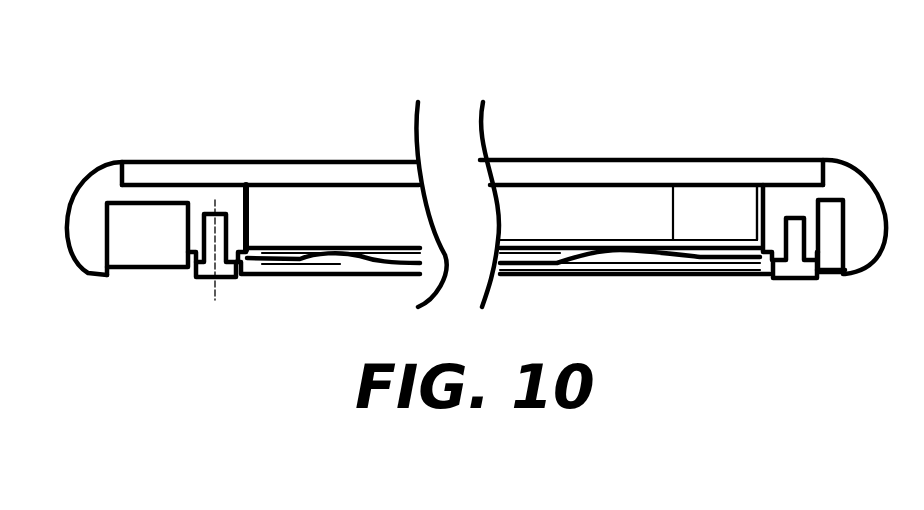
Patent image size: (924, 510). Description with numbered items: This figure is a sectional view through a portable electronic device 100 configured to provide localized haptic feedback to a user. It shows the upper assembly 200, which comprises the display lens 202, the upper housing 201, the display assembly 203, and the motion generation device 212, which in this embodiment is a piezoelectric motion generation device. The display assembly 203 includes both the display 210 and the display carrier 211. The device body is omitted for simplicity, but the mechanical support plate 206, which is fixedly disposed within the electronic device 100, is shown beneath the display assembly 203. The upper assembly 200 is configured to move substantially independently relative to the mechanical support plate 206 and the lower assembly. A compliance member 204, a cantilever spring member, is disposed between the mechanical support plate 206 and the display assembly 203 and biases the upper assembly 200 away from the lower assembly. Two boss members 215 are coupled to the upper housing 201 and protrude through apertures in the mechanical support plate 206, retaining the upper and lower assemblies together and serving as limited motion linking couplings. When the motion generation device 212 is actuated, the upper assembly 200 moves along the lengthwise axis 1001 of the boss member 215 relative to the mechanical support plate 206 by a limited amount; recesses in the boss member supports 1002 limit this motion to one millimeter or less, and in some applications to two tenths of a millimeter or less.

The electronic device 100 is at (508, 150).
The upper assembly 200 is at (94, 156).
The upper housing 201 is at (110, 181).
The display lens 202 is at (318, 172).
The display assembly 203 is at (283, 172).
The compliance member 204 is at (327, 256).
The mechanical support plate 206 is at (396, 275).
The display 210 is at (650, 208).
The display carrier 211 is at (603, 240).
The motion generation device 212 is at (705, 208).
The boss member 215 is at (202, 279).
The lengthwise axis 1001 is at (217, 292).
The boss member support 1002 is at (197, 227).